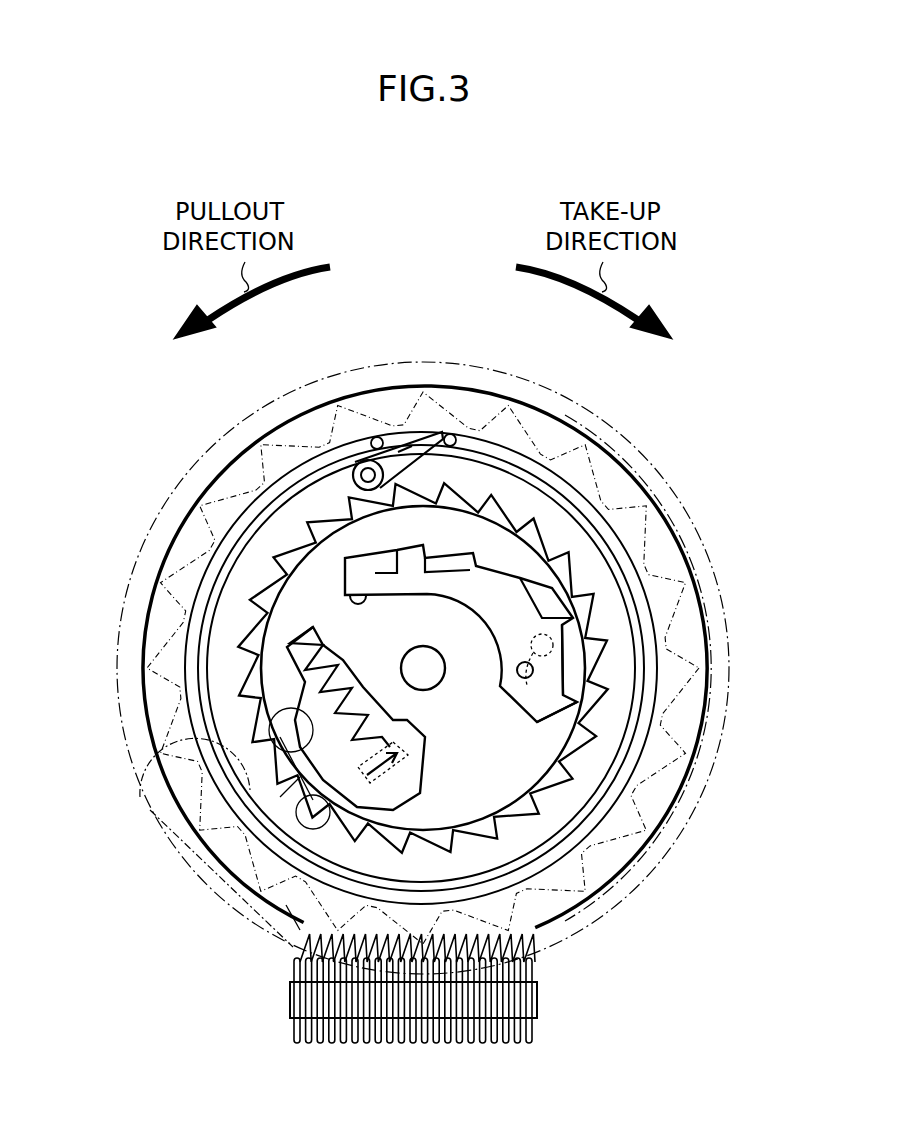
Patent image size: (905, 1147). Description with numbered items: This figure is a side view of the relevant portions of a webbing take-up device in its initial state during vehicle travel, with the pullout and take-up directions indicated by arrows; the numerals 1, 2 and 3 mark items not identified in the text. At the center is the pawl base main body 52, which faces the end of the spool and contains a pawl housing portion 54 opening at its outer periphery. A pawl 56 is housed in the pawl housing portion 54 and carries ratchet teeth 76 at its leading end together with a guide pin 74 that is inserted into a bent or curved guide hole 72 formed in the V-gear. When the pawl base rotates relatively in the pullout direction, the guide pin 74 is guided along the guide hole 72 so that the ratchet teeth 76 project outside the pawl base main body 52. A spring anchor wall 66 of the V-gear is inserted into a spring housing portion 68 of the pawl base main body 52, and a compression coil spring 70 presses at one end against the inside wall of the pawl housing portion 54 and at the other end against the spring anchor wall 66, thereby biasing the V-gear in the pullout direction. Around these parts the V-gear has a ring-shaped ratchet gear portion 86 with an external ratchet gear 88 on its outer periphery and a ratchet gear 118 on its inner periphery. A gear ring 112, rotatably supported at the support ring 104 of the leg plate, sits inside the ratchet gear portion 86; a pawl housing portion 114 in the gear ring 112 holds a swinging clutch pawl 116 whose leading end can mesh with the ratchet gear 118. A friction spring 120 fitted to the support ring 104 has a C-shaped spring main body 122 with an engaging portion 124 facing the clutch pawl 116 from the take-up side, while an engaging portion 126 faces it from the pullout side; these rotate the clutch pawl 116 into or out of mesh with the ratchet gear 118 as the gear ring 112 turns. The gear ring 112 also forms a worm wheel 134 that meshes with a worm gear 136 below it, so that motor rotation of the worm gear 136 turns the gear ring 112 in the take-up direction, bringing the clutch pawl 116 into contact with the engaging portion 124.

The webbing take-up device 1 is at (290, 850).
The spring 2 is at (290, 912).
The lock mechanism 3 is at (313, 845).
The pawl base main body 52 is at (320, 568).
The pawl housing portion 54 is at (346, 601).
The pawl 56 is at (432, 599).
The spring anchor wall 66 is at (410, 765).
The spring housing portion 68 is at (325, 775).
The compression coil spring 70 is at (396, 722).
The guide hole 72 is at (532, 640).
The guide pin 74 is at (517, 670).
The ratchet teeth 76 is at (592, 602).
The ratchet gear portion 86 is at (655, 522).
The ratchet gear 88 is at (700, 700).
The support ring 104 is at (642, 668).
The gear ring 112 is at (620, 464).
The pawl housing portion 114 is at (402, 450).
The clutch pawl 116 is at (450, 434).
The ratchet gear 118 is at (142, 797).
The friction spring 120 is at (541, 456).
The spring main body 122 is at (656, 606).
The engaging portion 124 is at (455, 436).
The engaging portion 126 is at (377, 437).
The worm wheel 134 is at (540, 942).
The worm gear 136 is at (426, 1043).